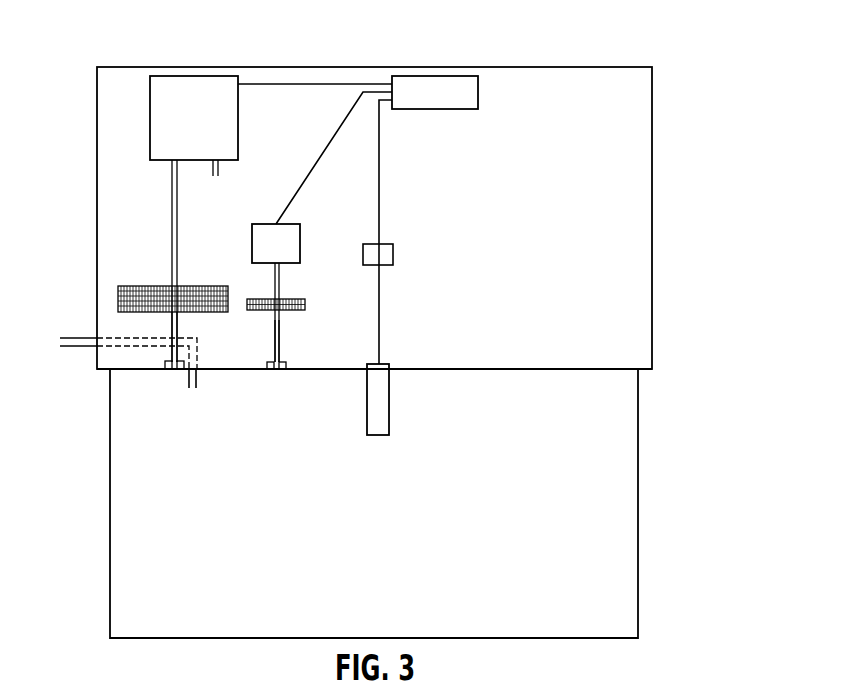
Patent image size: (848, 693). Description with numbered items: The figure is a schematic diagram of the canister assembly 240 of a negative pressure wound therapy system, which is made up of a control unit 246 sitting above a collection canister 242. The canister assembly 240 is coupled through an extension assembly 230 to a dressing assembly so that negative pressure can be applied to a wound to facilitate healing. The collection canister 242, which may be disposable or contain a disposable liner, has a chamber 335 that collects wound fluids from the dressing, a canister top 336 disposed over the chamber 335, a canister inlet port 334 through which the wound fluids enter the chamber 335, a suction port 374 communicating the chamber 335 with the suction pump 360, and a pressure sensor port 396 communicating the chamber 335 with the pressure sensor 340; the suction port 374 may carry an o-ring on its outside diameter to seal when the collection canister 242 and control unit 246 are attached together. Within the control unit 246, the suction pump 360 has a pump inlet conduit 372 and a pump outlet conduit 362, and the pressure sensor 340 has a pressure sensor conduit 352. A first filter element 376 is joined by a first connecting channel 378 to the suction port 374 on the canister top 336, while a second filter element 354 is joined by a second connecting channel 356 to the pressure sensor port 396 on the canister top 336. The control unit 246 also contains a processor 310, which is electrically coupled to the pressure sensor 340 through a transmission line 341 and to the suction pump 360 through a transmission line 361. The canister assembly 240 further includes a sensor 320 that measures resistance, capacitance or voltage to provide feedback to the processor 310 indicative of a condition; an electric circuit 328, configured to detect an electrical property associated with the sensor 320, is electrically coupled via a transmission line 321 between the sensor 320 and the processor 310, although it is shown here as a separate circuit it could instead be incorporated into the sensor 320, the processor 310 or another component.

The canister assembly 240 is at (556, 44).
The control unit 246 is at (655, 198).
The collection canister 242 is at (651, 490).
The canister top 336 is at (476, 374).
The chamber 335 is at (178, 524).
The extension assembly 230 is at (78, 347).
The suction pump 360 is at (150, 117).
The transmission line 361 is at (328, 86).
The pump outlet conduit 362 is at (218, 166).
The processor 310 is at (435, 110).
The transmission line 341 is at (323, 153).
The transmission line 321 is at (380, 177).
The electric circuit 328 is at (393, 254).
The sensor 320 is at (358, 436).
The pressure sensor 340 is at (300, 245).
The pressure sensor conduit 352 is at (279, 281).
The second filter element 354 is at (305, 304).
The second connecting channel 356 is at (279, 342).
The pressure sensor port 396 is at (277, 372).
The pump inlet conduit 372 is at (172, 218).
The first filter element 376 is at (118, 298).
The first connecting channel 378 is at (178, 318).
The suction port 374 is at (173, 373).
The canister inlet port 334 is at (192, 388).